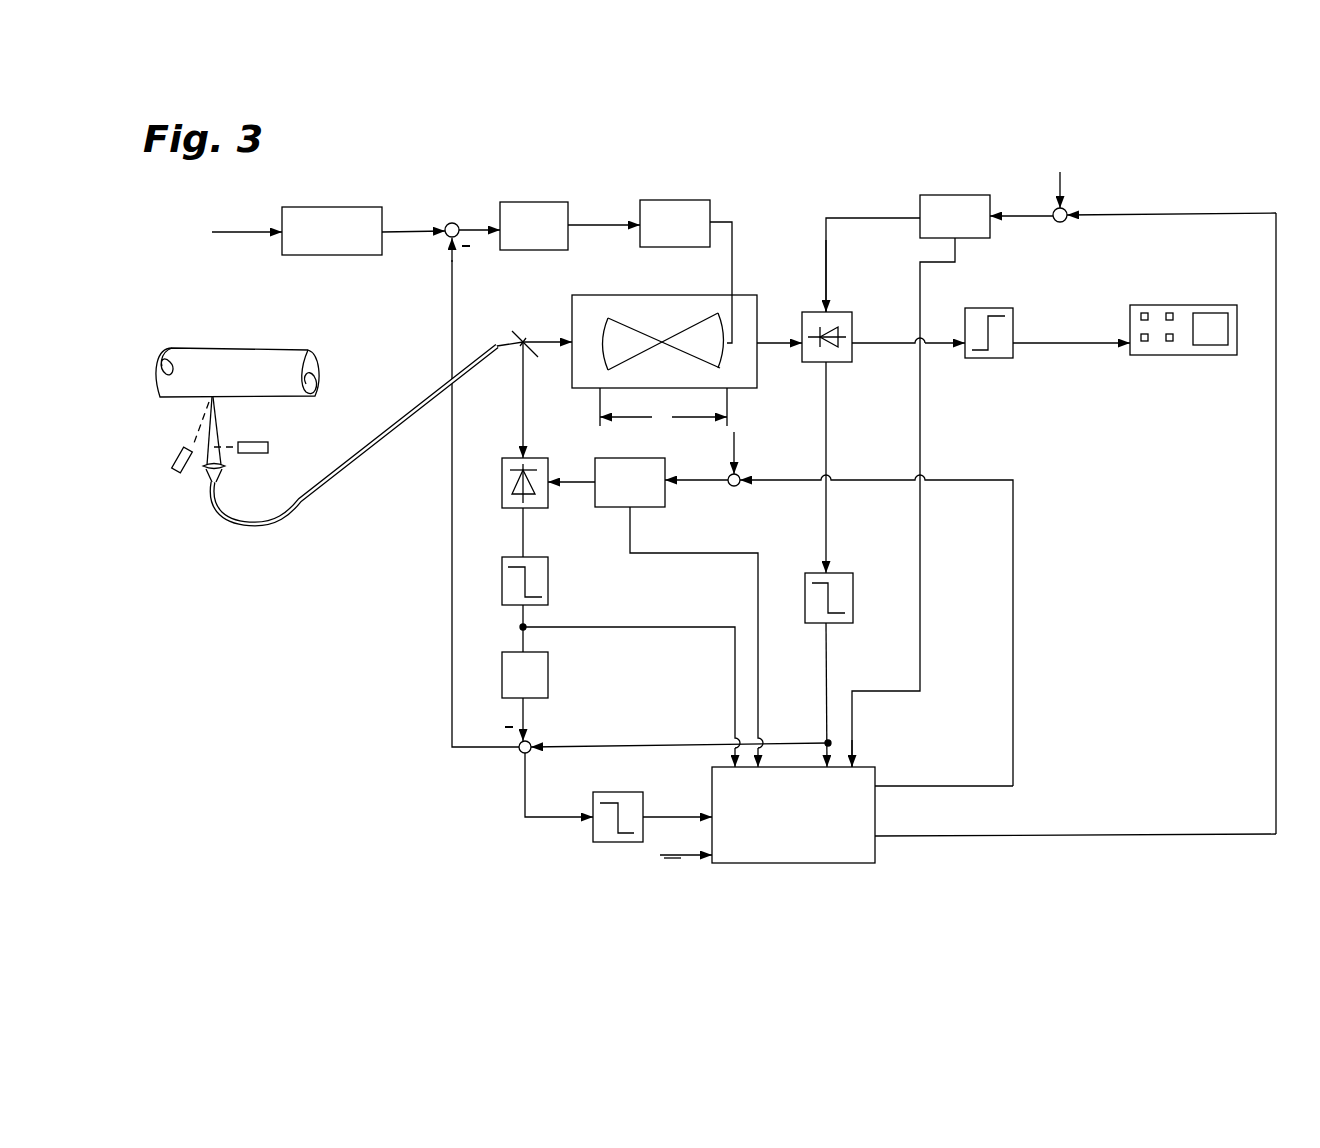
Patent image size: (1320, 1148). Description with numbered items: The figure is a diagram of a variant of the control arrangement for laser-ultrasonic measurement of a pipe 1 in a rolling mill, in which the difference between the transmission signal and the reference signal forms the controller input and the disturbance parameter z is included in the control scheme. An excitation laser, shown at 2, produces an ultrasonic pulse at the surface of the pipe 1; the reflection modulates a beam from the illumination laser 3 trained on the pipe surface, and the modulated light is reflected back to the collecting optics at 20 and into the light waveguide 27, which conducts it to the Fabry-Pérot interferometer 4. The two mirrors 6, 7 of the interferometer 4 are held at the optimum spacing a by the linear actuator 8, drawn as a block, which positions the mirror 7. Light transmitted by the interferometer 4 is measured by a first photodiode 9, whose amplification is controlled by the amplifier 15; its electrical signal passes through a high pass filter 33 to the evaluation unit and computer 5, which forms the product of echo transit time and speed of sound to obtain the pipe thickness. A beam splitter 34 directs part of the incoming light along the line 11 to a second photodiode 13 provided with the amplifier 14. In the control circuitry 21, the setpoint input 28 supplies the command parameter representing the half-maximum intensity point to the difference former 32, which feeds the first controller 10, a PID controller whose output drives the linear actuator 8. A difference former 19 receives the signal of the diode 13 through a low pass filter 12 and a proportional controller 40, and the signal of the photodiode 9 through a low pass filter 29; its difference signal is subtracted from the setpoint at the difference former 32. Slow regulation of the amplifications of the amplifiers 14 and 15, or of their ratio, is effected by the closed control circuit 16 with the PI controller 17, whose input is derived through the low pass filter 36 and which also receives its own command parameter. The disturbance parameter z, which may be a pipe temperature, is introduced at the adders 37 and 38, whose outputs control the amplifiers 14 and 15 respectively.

The pipe 1 is at (207, 360).
The sensor 2 is at (177, 448).
The illumination laser 3 is at (253, 442).
The Fabry-Pérot interferometer 4 is at (590, 305).
The evaluation unit and computer 5 is at (1183, 305).
The mirror 6 is at (609, 328).
The mirror 7 is at (722, 318).
The linear actuator 8 is at (673, 200).
The first photodiode 9 is at (815, 315).
The first controller 10 is at (531, 202).
The line 11 is at (518, 408).
The low pass filter 12 is at (548, 583).
The second photodiode 13 is at (508, 514).
The amplifier 14 is at (610, 510).
The amplifier 15 is at (960, 196).
The closed control circuit 16 is at (927, 749).
The second controller 17 is at (858, 801).
The difference former 19 is at (522, 754).
The optical sensor head 20 is at (298, 490).
The control circuitry 21 is at (544, 291).
The light waveguide 27 is at (346, 467).
The setpoint input 28 is at (318, 207).
The low pass filter 29 is at (845, 575).
The difference former 32 is at (453, 222).
The high pass filter 33 is at (978, 311).
The beam splitter 34 is at (526, 341).
The low pass filter 36 is at (606, 843).
The adder 37 is at (735, 489).
The adder 38 is at (1055, 210).
The proportional controller 40 is at (548, 672).